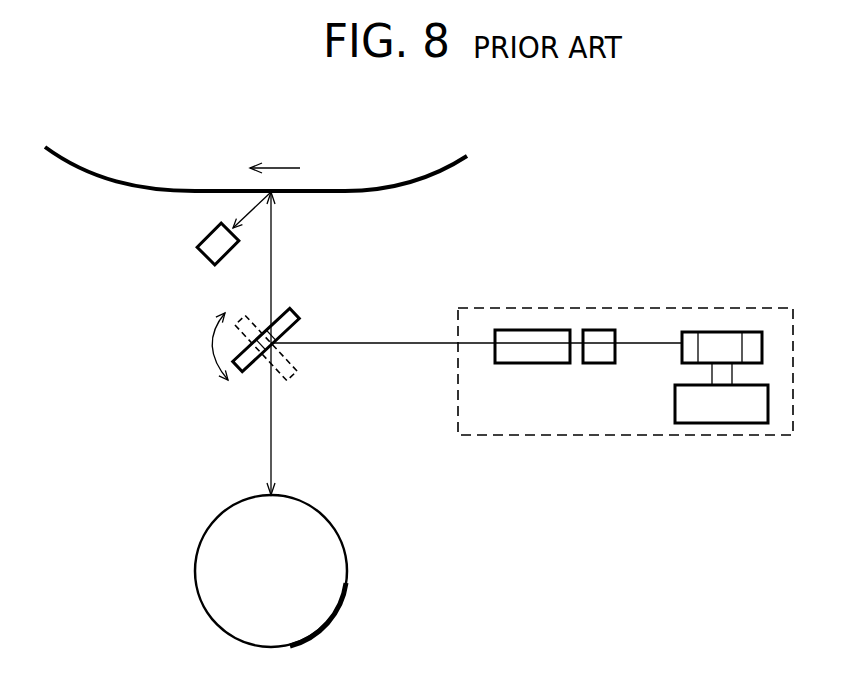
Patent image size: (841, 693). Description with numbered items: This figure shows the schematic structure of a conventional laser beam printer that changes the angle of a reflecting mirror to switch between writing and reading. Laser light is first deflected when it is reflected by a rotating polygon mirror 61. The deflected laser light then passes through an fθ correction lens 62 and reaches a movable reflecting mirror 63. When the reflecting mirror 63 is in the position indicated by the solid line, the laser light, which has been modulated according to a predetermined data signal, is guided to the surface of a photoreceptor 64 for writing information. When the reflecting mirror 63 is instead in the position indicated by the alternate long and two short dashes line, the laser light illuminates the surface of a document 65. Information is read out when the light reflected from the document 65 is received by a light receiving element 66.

The rotating polygon mirror 61 is at (733, 330).
The fθ correction lens 62 is at (535, 327).
The movable reflecting mirror 63 is at (260, 367).
The photoreceptor 64 is at (332, 545).
The document 65 is at (193, 188).
The light receiving element 66 is at (200, 255).